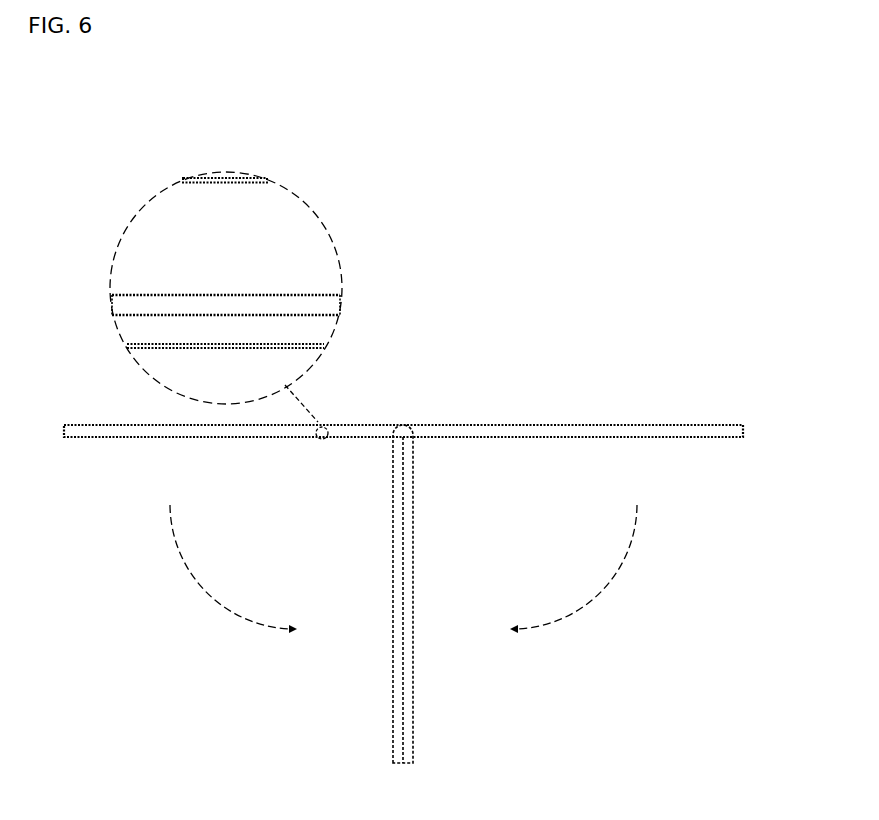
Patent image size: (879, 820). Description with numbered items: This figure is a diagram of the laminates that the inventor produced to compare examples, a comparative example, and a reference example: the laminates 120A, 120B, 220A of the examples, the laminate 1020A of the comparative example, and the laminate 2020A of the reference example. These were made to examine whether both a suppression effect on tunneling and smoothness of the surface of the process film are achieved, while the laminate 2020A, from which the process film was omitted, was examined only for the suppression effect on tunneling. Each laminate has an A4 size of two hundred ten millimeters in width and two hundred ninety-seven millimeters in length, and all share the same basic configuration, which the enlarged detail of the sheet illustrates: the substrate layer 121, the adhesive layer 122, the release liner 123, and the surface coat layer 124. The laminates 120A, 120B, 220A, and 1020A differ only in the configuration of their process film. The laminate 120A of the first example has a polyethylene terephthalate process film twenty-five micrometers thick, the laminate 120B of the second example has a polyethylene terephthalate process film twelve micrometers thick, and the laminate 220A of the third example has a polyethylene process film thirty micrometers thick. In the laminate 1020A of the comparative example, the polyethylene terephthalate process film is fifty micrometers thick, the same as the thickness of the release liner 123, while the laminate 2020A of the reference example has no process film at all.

The laminate 120A is at (439, 393).
The laminate 120B is at (439, 393).
The laminate 220A is at (439, 393).
The laminate 1020A is at (439, 393).
The laminate 2020A is at (502, 419).
The substrate layer 121 is at (148, 250).
The adhesive layer 122 is at (127, 307).
The release liner 123 is at (137, 332).
The surface coat layer 124 is at (219, 176).